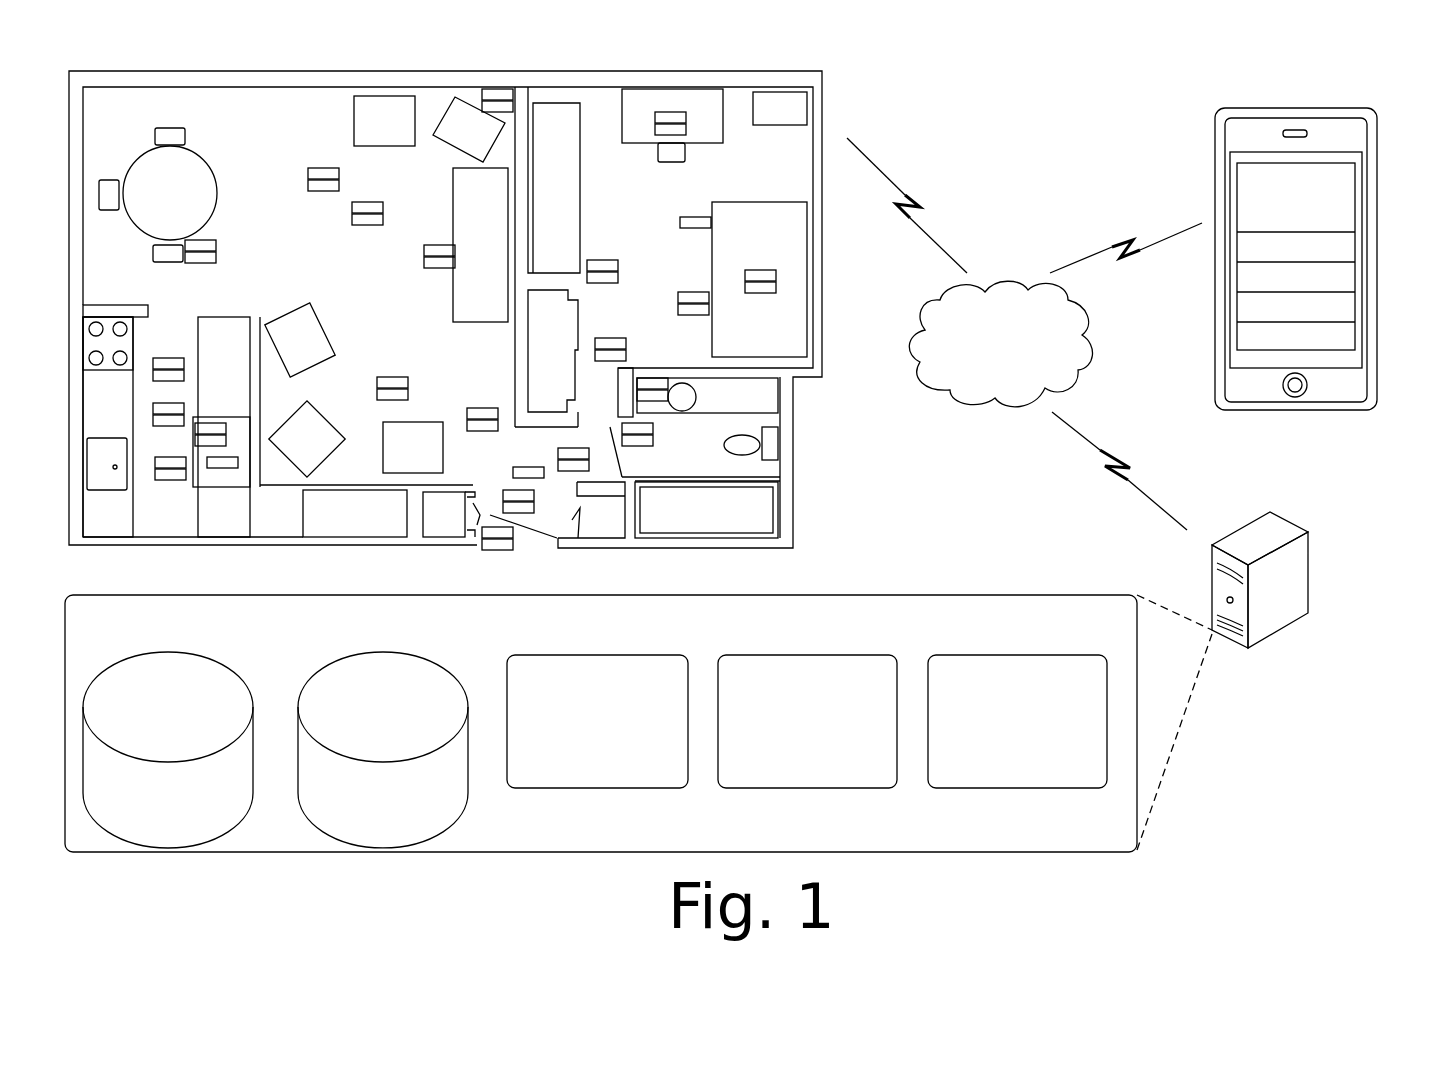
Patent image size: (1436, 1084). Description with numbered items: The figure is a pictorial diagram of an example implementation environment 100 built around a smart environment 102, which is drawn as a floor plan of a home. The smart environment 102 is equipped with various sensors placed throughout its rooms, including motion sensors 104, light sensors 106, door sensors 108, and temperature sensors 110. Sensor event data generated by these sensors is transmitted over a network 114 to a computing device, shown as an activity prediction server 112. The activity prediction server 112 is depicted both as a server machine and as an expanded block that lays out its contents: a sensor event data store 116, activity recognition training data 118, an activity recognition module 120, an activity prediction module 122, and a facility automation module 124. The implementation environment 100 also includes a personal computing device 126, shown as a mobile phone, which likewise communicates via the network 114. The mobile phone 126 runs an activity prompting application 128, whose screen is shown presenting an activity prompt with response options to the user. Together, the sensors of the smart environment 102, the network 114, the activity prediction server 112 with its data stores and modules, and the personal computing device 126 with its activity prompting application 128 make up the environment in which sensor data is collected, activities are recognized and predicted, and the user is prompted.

The implementation environment 100 is at (1022, 114).
The smart environment 102 is at (827, 122).
The motion sensors 104 is at (357, 198).
The light sensors 106 is at (697, 215).
The door sensors 108 is at (652, 425).
The temperature sensors 110 is at (638, 447).
The activity prediction server 112 is at (1308, 532).
The network 114 is at (1058, 348).
The sensor event data store 116 is at (153, 754).
The activity recognition training data 118 is at (368, 784).
The activity recognition module 120 is at (597, 721).
The activity prediction module 122 is at (807, 721).
The facility automation module 124 is at (1017, 721).
The personal computing device 126 is at (1295, 108).
The activity prompting application 128 is at (1357, 203).